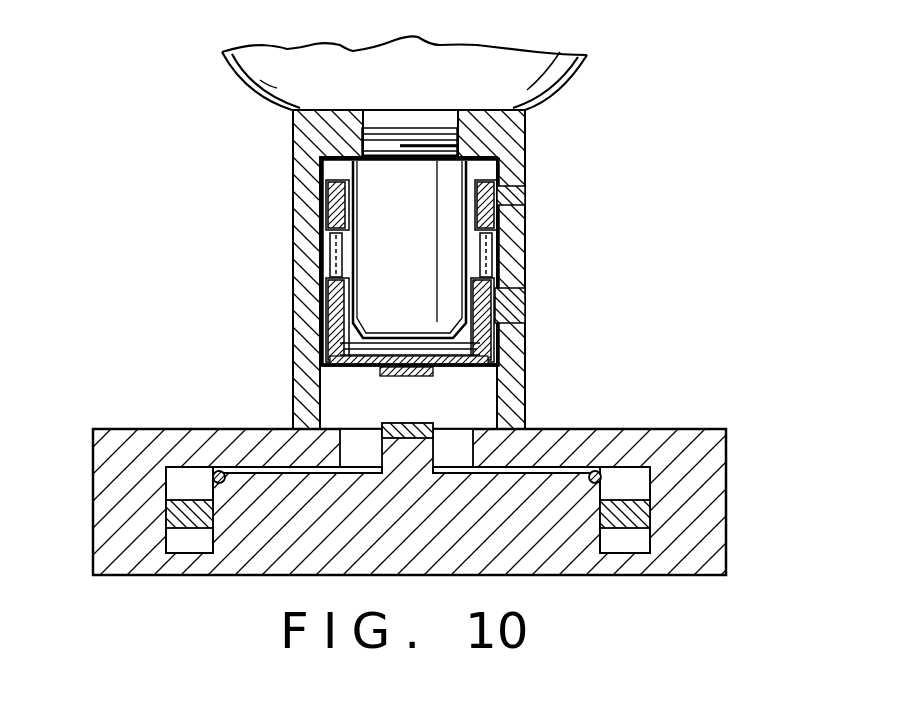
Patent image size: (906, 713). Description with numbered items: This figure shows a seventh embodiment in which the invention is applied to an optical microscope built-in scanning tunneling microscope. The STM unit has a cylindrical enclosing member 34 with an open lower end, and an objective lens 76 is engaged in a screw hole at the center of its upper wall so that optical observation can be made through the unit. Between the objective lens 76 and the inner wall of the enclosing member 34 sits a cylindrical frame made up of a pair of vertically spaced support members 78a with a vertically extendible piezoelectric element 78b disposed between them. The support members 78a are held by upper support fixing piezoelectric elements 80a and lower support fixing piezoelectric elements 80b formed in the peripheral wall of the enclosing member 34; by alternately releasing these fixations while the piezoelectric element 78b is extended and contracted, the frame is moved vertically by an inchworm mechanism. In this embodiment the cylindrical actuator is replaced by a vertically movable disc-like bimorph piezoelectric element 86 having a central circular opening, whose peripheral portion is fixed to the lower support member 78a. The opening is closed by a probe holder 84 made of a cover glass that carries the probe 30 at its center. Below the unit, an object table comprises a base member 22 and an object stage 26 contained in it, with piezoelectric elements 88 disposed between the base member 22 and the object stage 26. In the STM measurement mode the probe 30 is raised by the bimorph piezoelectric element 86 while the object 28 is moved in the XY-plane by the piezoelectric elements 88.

The base member 22 is at (708, 437).
The object stage 26 is at (380, 450).
The object 28 is at (433, 425).
The probe 30 is at (407, 380).
The enclosing member 34 is at (525, 138).
The objective lens 76 is at (360, 177).
The support members 78a is at (497, 183).
The vertically extendible piezoelectric element 78b is at (492, 255).
The upper support fixing piezoelectric elements 80a is at (525, 201).
The lower support fixing piezoelectric elements 80b is at (525, 303).
The probe holder 84 is at (435, 375).
The bimorph piezoelectric element 86 is at (347, 367).
The piezoelectric elements 88 is at (163, 481).